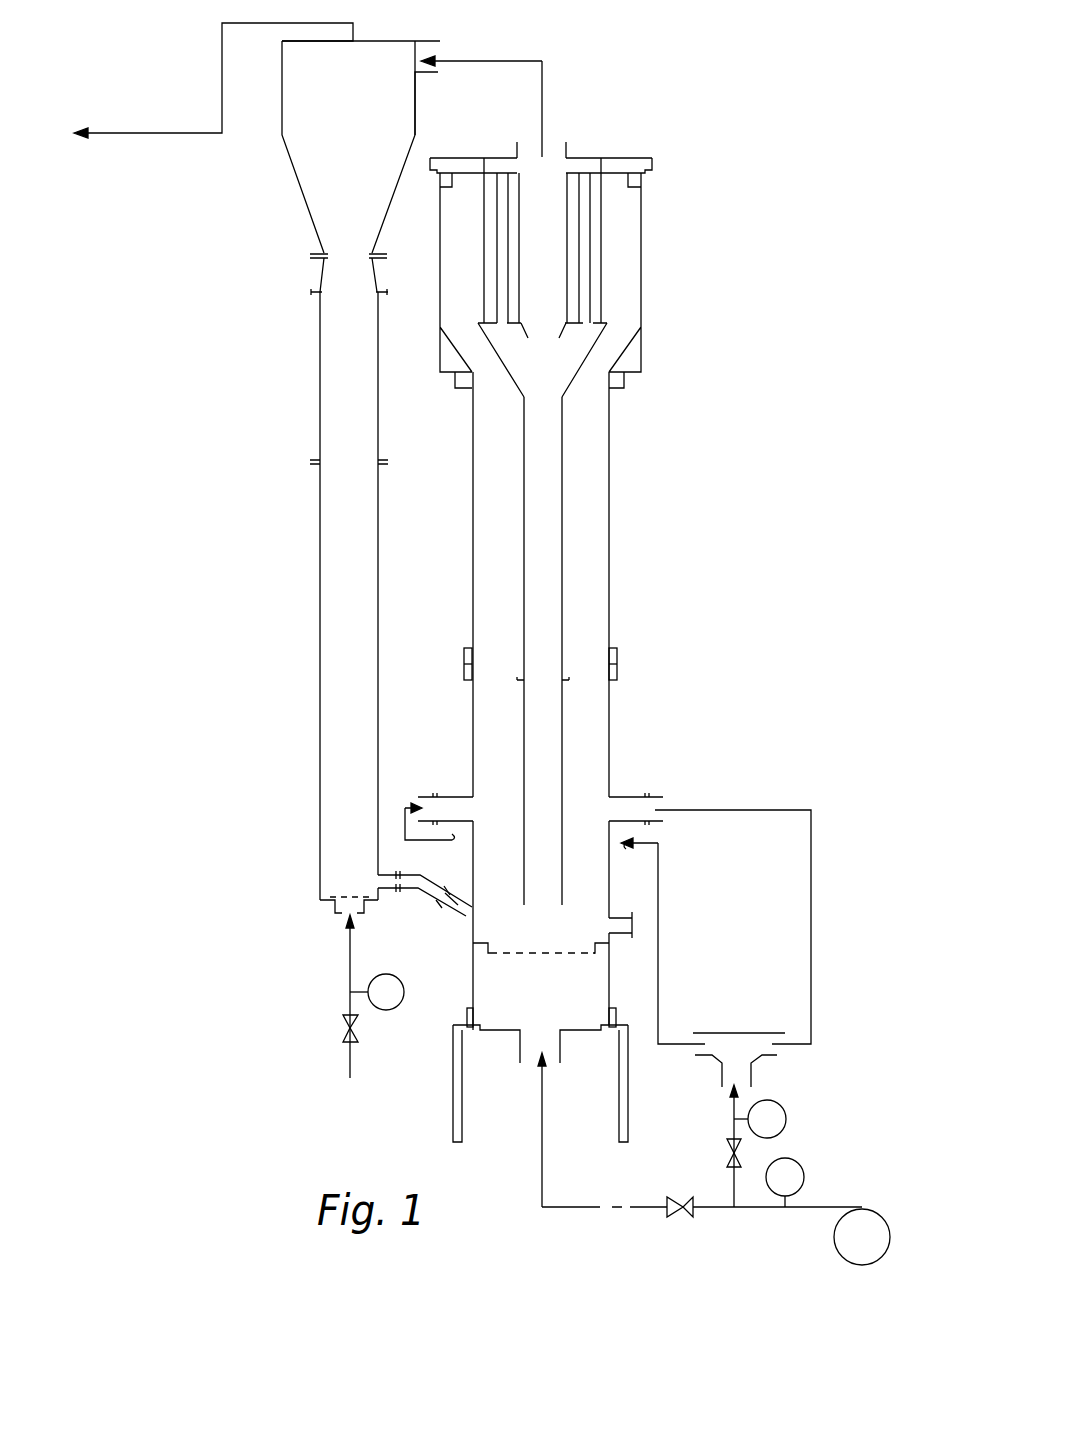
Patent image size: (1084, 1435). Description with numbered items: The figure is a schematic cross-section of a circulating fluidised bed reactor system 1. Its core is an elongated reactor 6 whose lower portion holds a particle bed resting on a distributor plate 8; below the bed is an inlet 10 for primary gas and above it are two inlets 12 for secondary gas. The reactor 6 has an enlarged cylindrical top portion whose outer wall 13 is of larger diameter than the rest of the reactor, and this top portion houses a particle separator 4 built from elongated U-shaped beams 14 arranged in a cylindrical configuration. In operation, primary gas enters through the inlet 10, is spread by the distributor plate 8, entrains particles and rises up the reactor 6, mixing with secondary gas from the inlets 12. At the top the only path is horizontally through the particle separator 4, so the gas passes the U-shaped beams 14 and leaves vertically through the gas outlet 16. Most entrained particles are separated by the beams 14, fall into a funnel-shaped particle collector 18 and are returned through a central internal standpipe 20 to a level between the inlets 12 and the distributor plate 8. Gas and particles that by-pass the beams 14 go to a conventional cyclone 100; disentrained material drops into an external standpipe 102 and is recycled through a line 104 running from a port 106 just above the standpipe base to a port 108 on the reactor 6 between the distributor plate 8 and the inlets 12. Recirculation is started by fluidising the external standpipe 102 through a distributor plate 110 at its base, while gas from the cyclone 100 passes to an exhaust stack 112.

The circulating fluidised bed reactor system 1 is at (198, 262).
The particle separator 4 is at (603, 300).
The elongated reactor 6 is at (610, 602).
The distributor plate 8 is at (508, 956).
The inlet for primary gas 10 is at (530, 1063).
The inlets for secondary gas 12 is at (415, 795).
The outer wall 13 is at (640, 283).
The elongated U-shaped beams 14 is at (593, 262).
The gas outlet 16 is at (552, 147).
The funnel-shaped particle collector 18 is at (545, 382).
The internal standpipe 20 is at (548, 487).
The cyclone 100 is at (313, 152).
The external standpipe 102 is at (325, 540).
The line 104 is at (400, 875).
The port 106 is at (372, 878).
The port 108 is at (470, 912).
The distributor plate 110 is at (325, 898).
The exhaust stack 112 is at (137, 127).